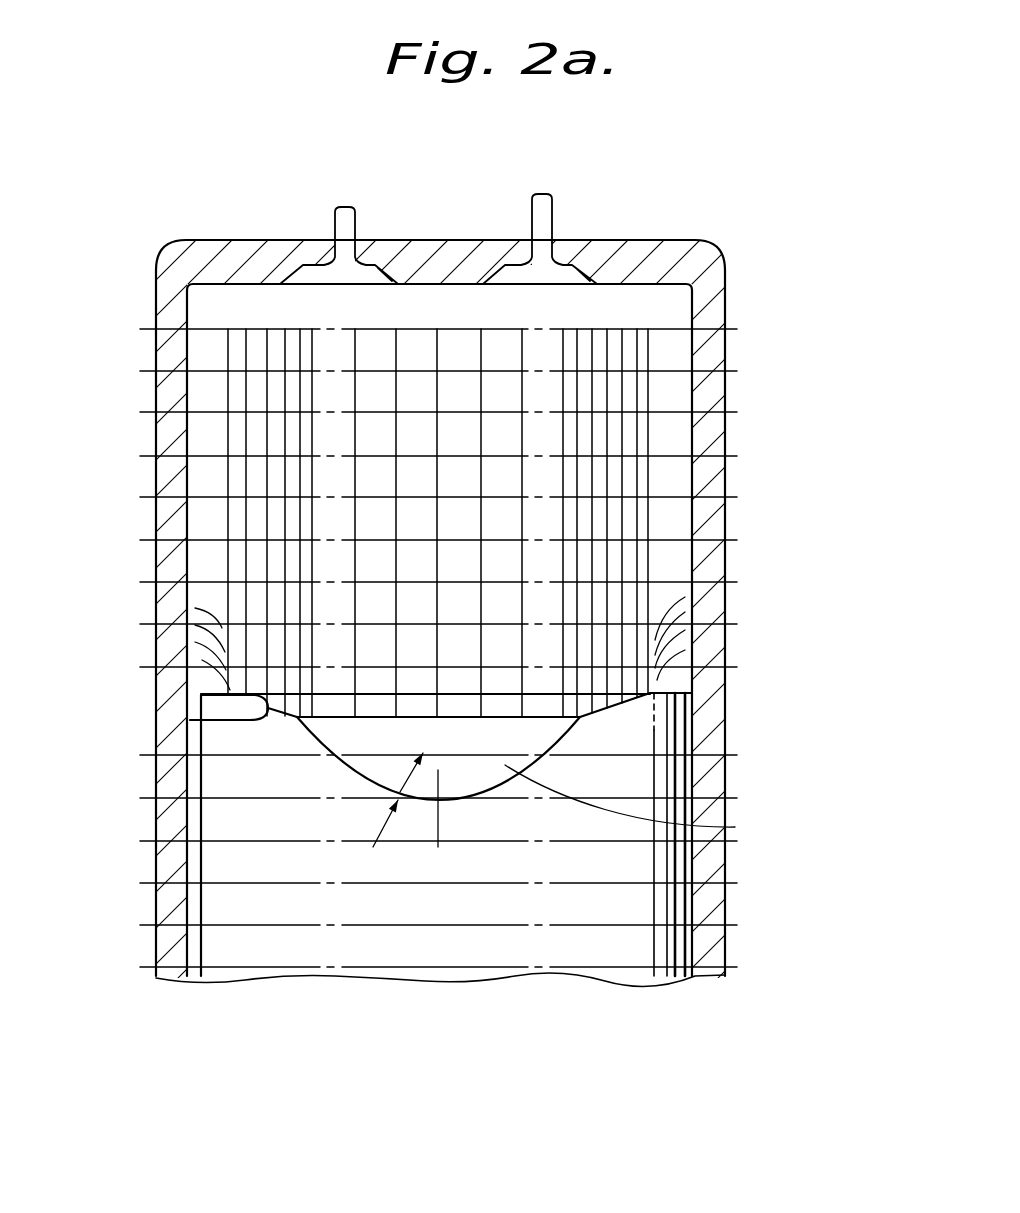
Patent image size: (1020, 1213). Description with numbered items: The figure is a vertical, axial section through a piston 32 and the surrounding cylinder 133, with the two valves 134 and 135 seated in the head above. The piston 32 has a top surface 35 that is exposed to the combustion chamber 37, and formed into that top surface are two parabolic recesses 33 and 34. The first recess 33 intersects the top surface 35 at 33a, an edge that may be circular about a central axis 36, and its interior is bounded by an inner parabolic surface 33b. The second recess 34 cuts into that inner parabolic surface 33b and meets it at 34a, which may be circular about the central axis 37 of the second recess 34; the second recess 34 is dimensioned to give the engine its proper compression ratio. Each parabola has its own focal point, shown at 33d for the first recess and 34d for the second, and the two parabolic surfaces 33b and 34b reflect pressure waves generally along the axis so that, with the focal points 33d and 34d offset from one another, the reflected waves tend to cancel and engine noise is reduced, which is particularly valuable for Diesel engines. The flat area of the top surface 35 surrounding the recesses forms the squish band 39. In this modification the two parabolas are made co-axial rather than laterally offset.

The piston 32 is at (460, 783).
The parabolic recess 33 is at (327, 704).
The intersection of recess with top surface 33a is at (650, 693).
The inner parabolic surface 33b is at (190, 720).
The focal point 33d is at (392, 498).
The parabolic recess 34 is at (540, 727).
The intersection of second recess with first recess surface 34a is at (580, 717).
The parabolic surface 34b is at (363, 773).
The focal point 34d is at (440, 735).
The top surface 35 is at (692, 700).
The central axis 36 is at (440, 525).
The central axis of recess 34 / combustion chamber 37 is at (438, 523).
The squish band 39 is at (660, 693).
The cylinder 133 is at (723, 387).
The valve 134 is at (315, 275).
The valve 135 is at (568, 272).